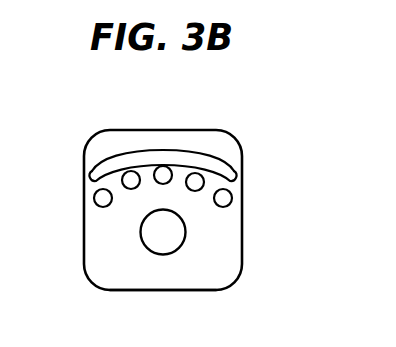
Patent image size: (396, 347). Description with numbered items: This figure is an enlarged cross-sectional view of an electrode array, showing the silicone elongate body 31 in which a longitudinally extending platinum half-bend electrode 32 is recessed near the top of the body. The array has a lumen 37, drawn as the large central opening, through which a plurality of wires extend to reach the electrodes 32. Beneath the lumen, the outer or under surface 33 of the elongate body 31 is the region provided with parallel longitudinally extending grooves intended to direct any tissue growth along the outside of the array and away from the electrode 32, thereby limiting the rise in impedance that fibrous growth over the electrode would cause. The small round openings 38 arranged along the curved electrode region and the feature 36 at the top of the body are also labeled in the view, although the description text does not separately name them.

The elongate body 31 is at (217, 268).
The half-bend electrodes 32 is at (103, 164).
The outer or under surface 33 is at (160, 283).
The top wall 36 is at (153, 130).
The lumen 37 is at (157, 240).
The apertures 38 is at (196, 181).